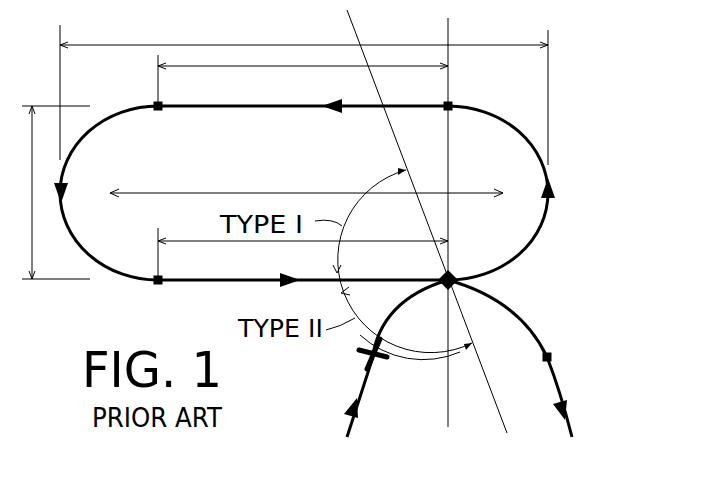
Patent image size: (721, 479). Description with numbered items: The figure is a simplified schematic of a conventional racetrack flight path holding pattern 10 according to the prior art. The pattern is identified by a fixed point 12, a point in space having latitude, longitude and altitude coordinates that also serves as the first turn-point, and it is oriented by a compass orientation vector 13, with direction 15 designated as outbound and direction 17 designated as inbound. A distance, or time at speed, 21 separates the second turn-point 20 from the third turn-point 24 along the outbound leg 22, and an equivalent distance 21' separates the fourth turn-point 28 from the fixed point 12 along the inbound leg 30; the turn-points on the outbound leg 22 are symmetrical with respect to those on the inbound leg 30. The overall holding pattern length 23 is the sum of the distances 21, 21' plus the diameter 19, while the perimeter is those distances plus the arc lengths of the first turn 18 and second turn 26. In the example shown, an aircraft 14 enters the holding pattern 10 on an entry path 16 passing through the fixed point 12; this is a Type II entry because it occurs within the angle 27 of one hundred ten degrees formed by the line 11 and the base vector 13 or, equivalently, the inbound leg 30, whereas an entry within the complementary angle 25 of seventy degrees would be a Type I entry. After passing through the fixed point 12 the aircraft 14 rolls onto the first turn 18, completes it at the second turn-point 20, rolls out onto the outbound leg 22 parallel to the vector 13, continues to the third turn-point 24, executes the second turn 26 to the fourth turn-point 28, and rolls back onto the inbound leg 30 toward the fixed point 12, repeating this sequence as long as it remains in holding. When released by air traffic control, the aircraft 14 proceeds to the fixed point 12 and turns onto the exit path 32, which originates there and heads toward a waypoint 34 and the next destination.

The holding pattern 10 is at (586, 197).
The line 11 is at (478, 343).
The fixed point 12 is at (453, 273).
The compass orientation vector 13 is at (205, 193).
The aircraft 14 is at (360, 356).
The outbound direction 15 is at (113, 191).
The entry path 16 is at (362, 386).
The inbound direction 17 is at (495, 187).
The first turn 18 is at (540, 237).
The diameter 19 is at (30, 227).
The second turn-point 20 is at (452, 104).
The distance 21 is at (303, 79).
The equivalent distance 21' is at (303, 256).
The outbound leg 22 is at (305, 108).
The overall holding pattern length 23 is at (270, 45).
The third turn-point 24 is at (159, 109).
The complementary angle 25 is at (356, 205).
The second turn 26 is at (70, 228).
The angle 27 is at (424, 349).
The fourth turn-point 28 is at (157, 287).
The inbound leg 30 is at (229, 284).
The exit path 32 is at (519, 303).
The waypoint 34 is at (553, 356).